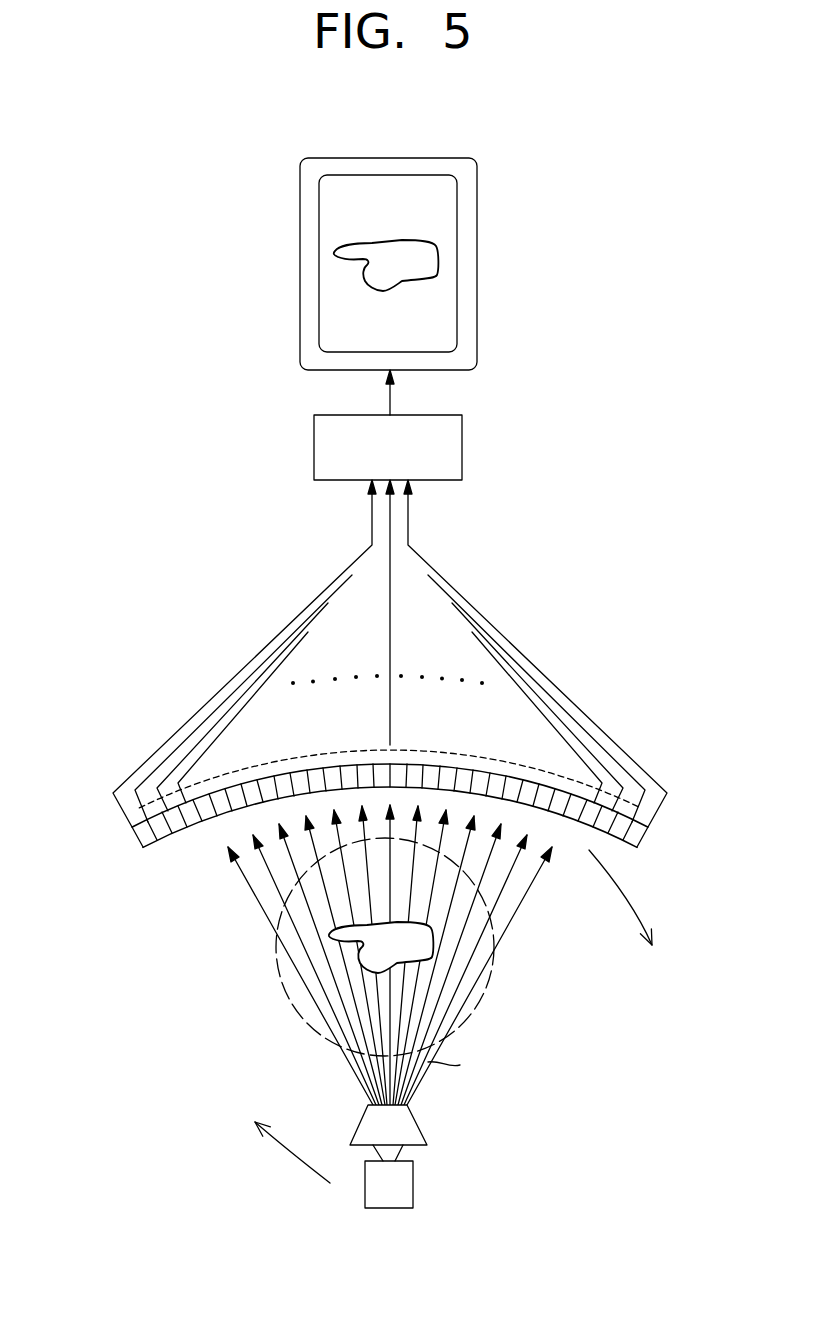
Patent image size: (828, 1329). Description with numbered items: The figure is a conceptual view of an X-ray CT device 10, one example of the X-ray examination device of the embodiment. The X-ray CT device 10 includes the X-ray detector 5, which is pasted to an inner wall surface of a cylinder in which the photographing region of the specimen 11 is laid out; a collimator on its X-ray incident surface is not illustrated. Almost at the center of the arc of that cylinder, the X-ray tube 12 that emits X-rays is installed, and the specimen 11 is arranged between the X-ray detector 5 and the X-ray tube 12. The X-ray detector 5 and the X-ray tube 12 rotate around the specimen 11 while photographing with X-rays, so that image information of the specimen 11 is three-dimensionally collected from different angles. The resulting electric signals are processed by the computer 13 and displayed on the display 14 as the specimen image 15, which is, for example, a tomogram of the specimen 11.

The X-ray detector 5 is at (125, 843).
The X-ray CT device 10 is at (614, 567).
The specimen 11 is at (423, 937).
The X-ray tube 12 is at (414, 1188).
The computer 13 is at (463, 450).
The display 14 is at (457, 212).
The specimen image 15 is at (426, 264).